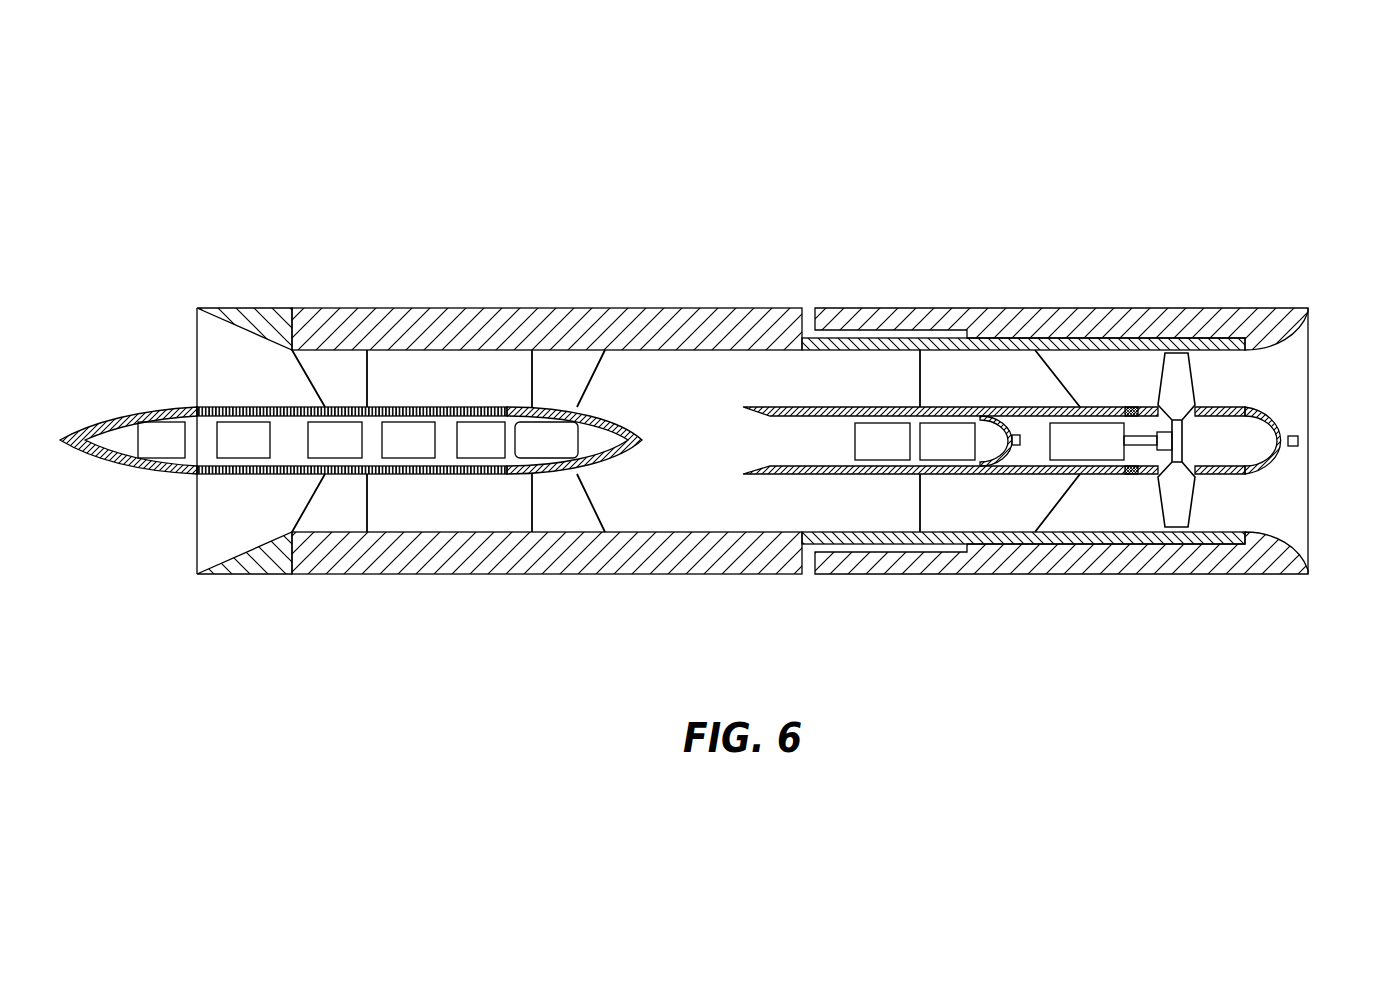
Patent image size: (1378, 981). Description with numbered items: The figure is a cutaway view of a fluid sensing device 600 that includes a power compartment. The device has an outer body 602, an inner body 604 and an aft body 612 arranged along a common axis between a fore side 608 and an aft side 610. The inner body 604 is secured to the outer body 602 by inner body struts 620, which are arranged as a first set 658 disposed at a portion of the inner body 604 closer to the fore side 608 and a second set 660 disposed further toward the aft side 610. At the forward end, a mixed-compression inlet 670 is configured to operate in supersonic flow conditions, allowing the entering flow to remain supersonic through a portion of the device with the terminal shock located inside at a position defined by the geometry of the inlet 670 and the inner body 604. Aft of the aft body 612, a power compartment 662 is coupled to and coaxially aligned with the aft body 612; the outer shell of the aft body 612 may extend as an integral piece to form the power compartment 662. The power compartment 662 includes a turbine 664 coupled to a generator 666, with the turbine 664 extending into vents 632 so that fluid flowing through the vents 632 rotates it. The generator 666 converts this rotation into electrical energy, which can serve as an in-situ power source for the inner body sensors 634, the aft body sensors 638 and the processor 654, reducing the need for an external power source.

The fluid sensing device 600 is at (260, 172).
The outer body 602 is at (478, 317).
The inner body 604 is at (147, 407).
The fore side 608 is at (197, 574).
The aft side 610 is at (1310, 543).
The aft body 612 is at (823, 415).
The inner body struts 620 is at (345, 365).
The vents 632 is at (1275, 373).
The inner body sensors 634 is at (420, 452).
The aft body sensors 638 is at (895, 447).
The processor 654 is at (577, 449).
The first set of inner body struts 658 is at (330, 515).
The second set of inner body struts 660 is at (565, 522).
The power compartment 662 is at (1020, 474).
The turbine 664 is at (1175, 373).
The generator 666 is at (1088, 433).
The mixed-compression inlet 670 is at (237, 328).